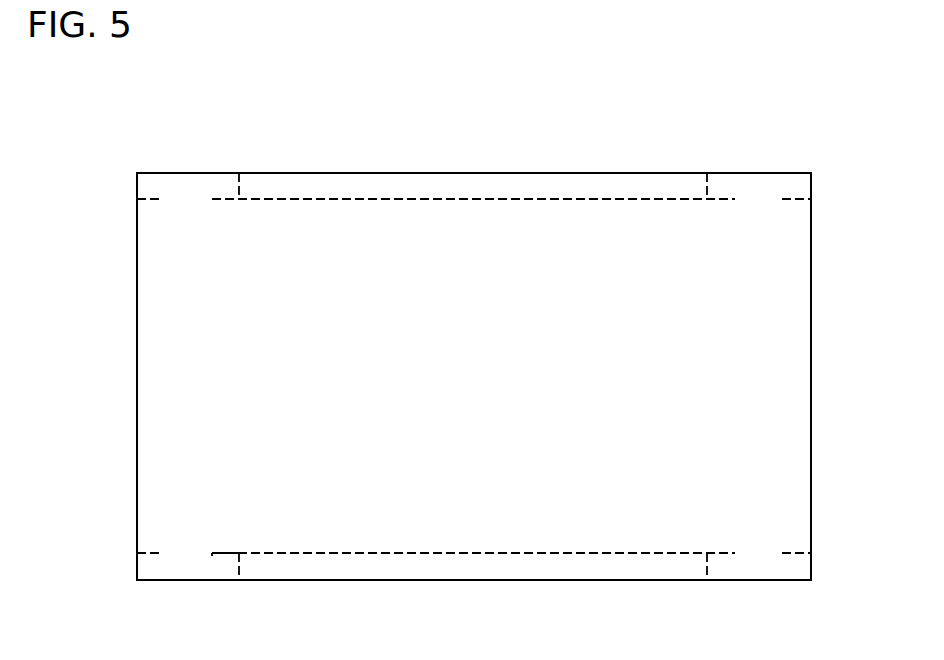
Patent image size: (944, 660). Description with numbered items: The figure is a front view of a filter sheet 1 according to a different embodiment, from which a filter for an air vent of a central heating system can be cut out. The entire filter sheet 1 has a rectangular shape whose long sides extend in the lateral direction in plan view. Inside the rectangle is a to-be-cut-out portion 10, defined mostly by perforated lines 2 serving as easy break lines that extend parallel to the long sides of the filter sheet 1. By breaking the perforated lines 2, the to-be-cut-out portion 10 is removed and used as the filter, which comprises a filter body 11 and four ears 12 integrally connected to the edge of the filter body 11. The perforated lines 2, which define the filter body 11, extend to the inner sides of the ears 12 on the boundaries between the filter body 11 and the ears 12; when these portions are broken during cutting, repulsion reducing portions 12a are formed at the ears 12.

The filter sheet 1 is at (744, 156).
The perforated lines 2 is at (481, 199).
The to-be-cut-out portion 10 is at (735, 486).
The filter body 11 is at (775, 412).
The ears 12 is at (187, 187).
The repulsion reducing portions 12a is at (219, 554).